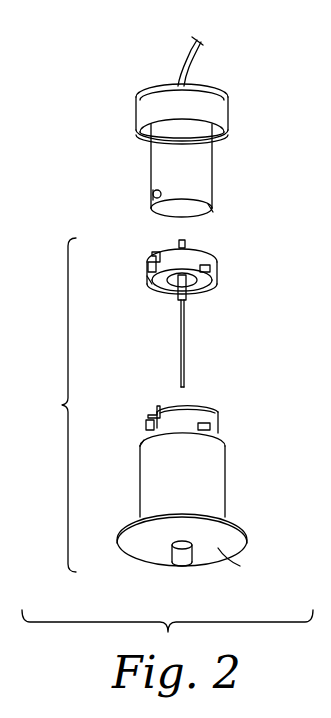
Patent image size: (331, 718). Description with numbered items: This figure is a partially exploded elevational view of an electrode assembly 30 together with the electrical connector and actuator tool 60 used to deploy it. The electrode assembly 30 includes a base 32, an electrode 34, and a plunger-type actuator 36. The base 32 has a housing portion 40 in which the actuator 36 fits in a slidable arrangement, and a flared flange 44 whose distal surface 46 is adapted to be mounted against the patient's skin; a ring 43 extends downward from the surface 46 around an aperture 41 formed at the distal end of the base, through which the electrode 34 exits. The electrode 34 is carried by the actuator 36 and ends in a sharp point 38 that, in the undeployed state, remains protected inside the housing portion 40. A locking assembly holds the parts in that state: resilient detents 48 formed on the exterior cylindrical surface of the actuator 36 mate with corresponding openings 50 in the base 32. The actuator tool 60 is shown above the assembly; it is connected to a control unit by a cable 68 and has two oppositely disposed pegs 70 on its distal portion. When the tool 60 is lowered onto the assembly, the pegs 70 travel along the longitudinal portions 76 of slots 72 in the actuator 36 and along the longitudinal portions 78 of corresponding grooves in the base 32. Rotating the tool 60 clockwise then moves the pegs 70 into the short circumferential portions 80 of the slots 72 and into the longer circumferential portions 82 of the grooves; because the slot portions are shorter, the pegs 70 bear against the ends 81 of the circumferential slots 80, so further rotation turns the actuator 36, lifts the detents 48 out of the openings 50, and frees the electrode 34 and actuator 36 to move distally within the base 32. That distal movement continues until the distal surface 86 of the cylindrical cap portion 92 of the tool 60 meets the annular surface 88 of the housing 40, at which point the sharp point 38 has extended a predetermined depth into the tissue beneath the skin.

The electrode assembly 30 is at (62, 405).
The base 32 is at (146, 490).
The electrode 34 is at (181, 334).
The actuator 36 is at (198, 254).
The sharp point 38 is at (181, 386).
The housing portion 40 is at (218, 456).
The aperture 41 is at (186, 562).
The ring 43 is at (170, 560).
The flange 44 is at (240, 522).
The distal surface 46 is at (218, 546).
The resilient detents 48 is at (206, 268).
The openings 50 is at (214, 418).
The electrical connector and actuator tool 60 is at (198, 168).
The cable 68 is at (180, 48).
The pegs 70 is at (152, 192).
The slots 72 is at (172, 240).
The longitudinal portions of slots 76 is at (154, 252).
The longitudinal portions of grooves 78 is at (158, 406).
The circumferential portions of slots 80 is at (152, 284).
The ends of circumferential slots 81 is at (149, 268).
The circumferential portions of grooves 82 is at (147, 424).
The distal surface 86 is at (226, 138).
The annular surface 88 is at (143, 449).
The cylindrical cap portion 92 is at (136, 112).